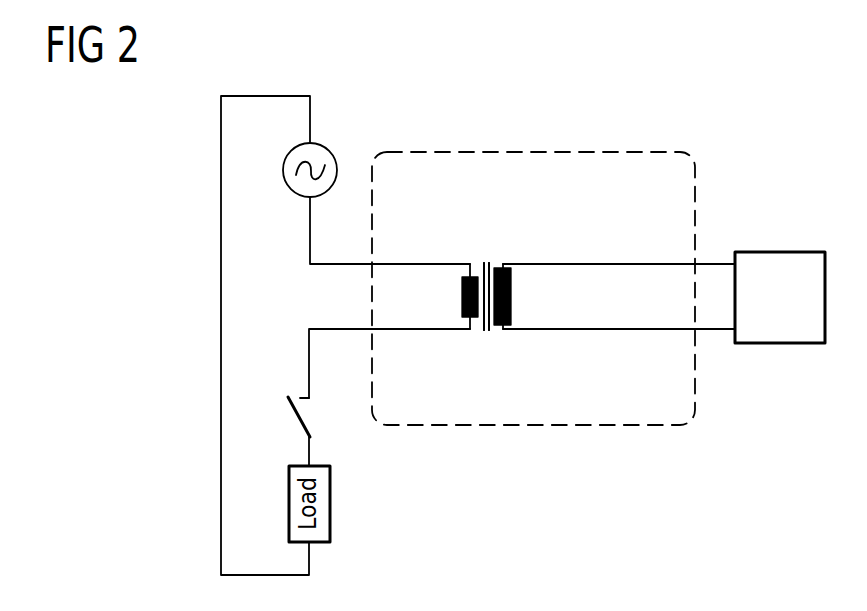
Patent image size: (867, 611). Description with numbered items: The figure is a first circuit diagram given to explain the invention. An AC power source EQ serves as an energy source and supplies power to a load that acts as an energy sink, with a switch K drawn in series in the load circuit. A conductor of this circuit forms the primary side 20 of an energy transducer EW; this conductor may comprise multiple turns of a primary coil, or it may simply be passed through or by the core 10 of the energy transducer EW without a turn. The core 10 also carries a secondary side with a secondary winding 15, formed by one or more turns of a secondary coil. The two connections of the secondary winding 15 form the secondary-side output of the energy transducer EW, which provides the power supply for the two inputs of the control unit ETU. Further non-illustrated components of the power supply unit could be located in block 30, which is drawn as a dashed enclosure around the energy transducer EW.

The core 10 is at (485, 333).
The secondary winding 15 is at (512, 297).
The primary side 20 is at (462, 297).
The block 30 is at (617, 428).
The energy transducer EW is at (495, 254).
The AC power source EQ is at (316, 151).
The switching contact K is at (313, 431).
The control unit ETU is at (780, 297).